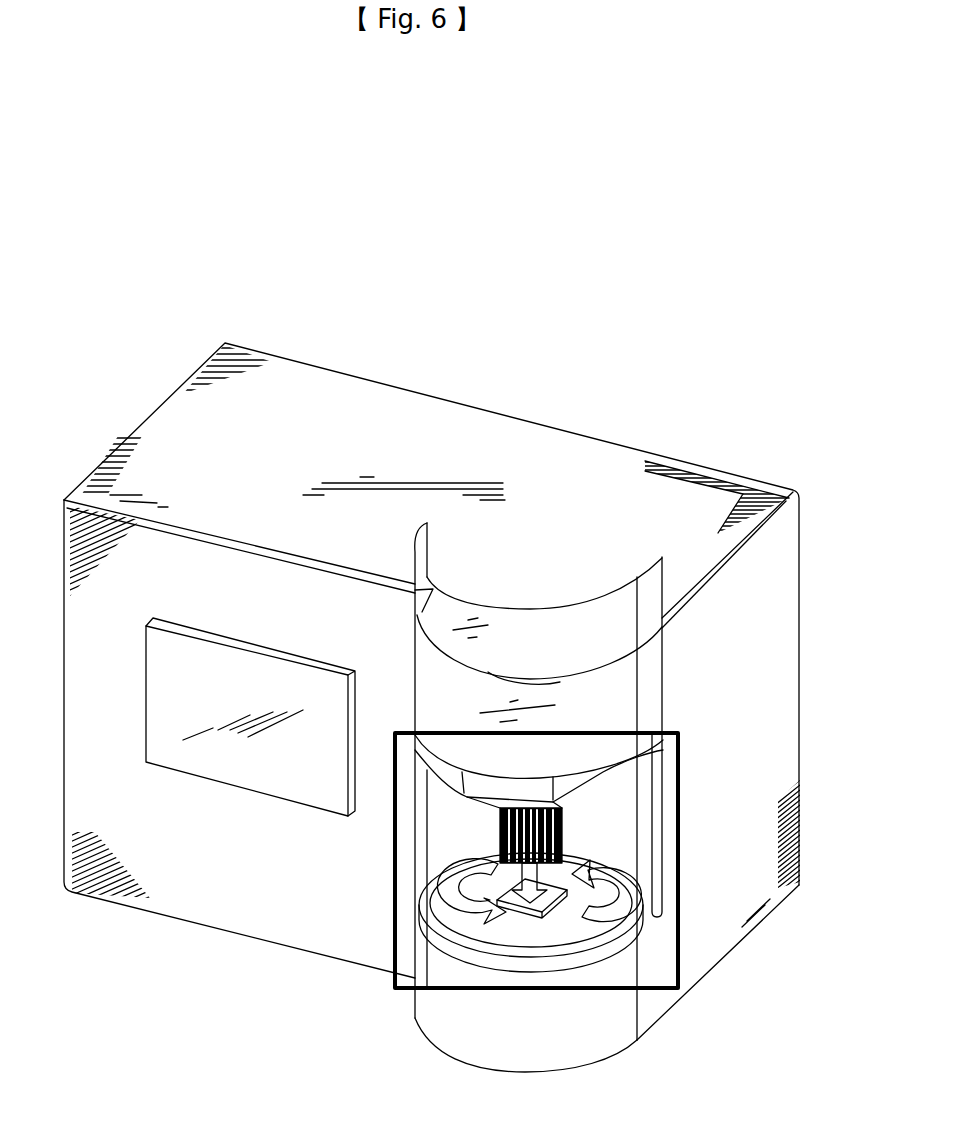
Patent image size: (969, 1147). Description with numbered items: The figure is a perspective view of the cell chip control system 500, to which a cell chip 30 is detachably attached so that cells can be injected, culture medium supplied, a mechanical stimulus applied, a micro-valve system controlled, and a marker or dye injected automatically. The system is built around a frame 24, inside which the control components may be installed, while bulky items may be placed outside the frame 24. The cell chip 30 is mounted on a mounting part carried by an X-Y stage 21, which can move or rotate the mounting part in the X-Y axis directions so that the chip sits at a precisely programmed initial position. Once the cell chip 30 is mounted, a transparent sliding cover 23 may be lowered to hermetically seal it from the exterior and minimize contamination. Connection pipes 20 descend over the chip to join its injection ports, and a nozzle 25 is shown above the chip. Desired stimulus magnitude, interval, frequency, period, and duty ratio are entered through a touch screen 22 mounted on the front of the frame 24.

The cell chip control system 500 is at (712, 337).
The frame 24 is at (180, 420).
The transparent sliding cover 23 is at (587, 633).
The touch screen 22 is at (175, 752).
The X-Y stage 21 is at (490, 933).
The nozzle 25 is at (563, 810).
The substrate 20 is at (578, 877).
The cell chip 30 is at (545, 913).